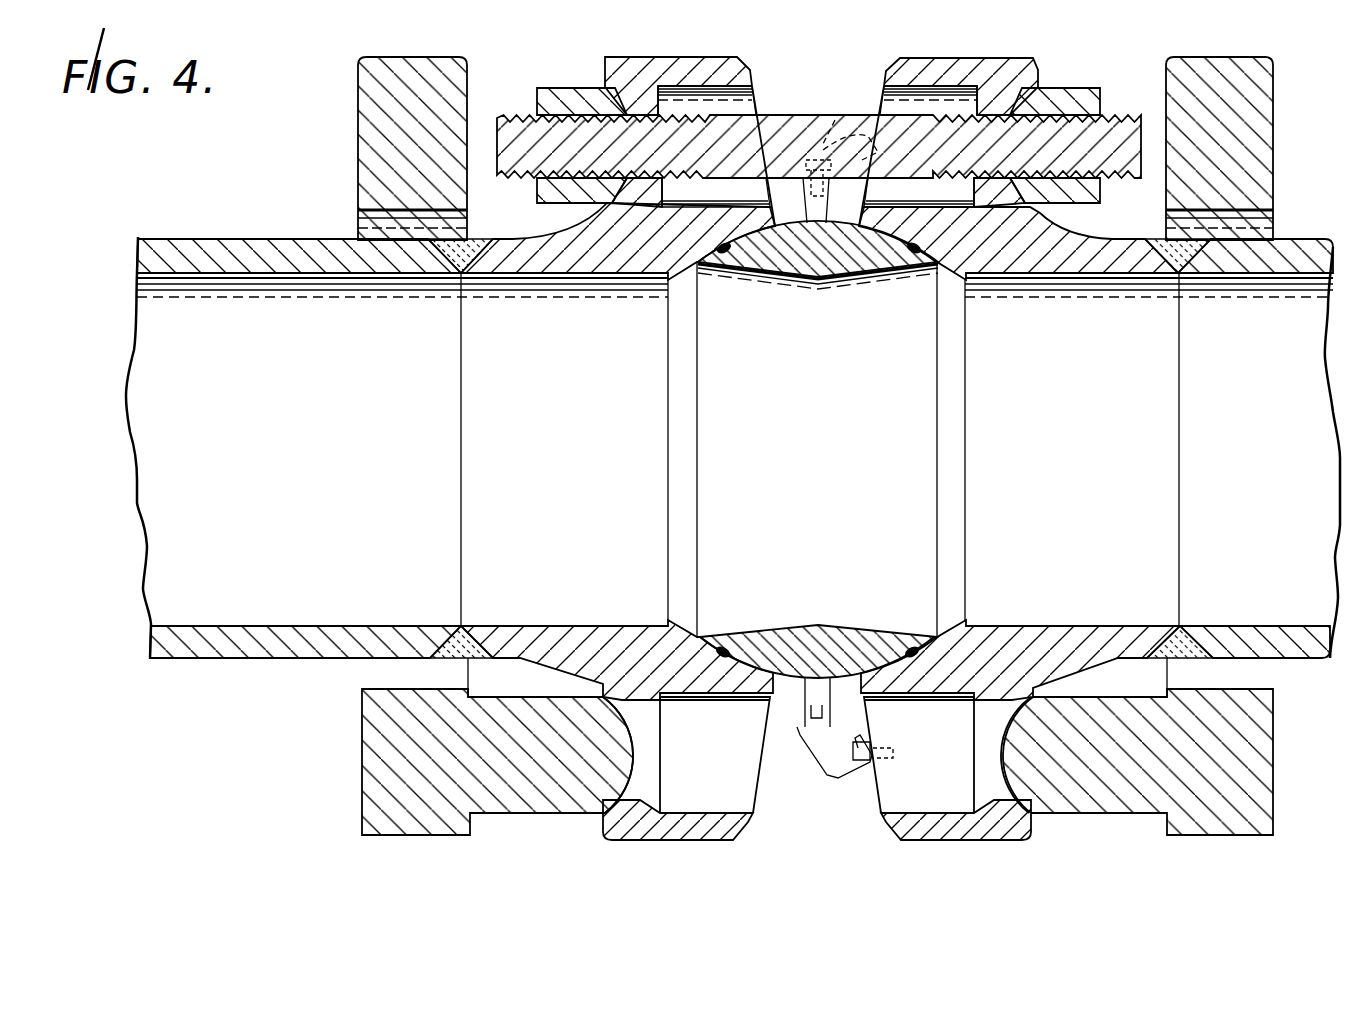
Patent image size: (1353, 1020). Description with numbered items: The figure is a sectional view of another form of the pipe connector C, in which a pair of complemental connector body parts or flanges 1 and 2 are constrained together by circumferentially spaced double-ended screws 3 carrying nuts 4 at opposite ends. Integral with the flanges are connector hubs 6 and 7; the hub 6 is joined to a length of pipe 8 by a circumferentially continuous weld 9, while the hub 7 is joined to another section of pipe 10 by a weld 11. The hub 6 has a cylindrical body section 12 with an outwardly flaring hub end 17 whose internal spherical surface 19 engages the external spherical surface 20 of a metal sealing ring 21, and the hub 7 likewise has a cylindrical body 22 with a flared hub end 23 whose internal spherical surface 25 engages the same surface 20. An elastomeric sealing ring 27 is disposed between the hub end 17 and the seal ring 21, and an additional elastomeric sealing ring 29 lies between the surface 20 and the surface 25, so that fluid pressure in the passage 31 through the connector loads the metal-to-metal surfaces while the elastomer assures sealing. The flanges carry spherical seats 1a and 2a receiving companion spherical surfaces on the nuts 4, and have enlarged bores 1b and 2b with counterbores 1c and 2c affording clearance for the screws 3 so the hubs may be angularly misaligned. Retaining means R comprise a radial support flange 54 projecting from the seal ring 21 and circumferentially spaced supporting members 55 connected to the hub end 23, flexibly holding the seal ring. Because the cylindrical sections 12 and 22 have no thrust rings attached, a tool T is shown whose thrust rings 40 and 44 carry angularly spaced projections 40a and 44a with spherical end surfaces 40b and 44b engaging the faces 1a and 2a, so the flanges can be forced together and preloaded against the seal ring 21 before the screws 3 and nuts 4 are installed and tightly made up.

The connector body part 1 is at (681, 442).
The spherical seat 1a is at (640, 732).
The enlarged bore 1b is at (640, 100).
The counterbore 1c is at (716, 810).
The connector body part 2 is at (978, 443).
The spherical seat 2a is at (1000, 740).
The enlarged bore 2b is at (1000, 96).
The counterbore 2c is at (905, 815).
The screw 3 is at (770, 114).
The nut 4 is at (548, 90).
The connector hub 6 is at (618, 451).
The connector hub 7 is at (1019, 453).
The pipe 8 is at (178, 656).
The weld 9 is at (442, 632).
The pipe 10 is at (1310, 650).
The weld 11 is at (1195, 640).
The cylindrical body section 12 is at (498, 630).
The hub end 17 is at (692, 676).
The internal spherical surface 19 is at (707, 682).
The external spherical surface 20 is at (762, 222).
The metal sealing ring 21 is at (833, 640).
The cylindrical body 22 is at (1120, 640).
The hub end 23 is at (933, 672).
The internal spherical surface 25 is at (902, 660).
The elastomeric sealing ring 27 is at (718, 247).
The elastomeric sealing ring 29 is at (918, 247).
The passage 31 is at (770, 450).
The tool thrust ring 40 is at (461, 476).
The projection 40a is at (536, 800).
The spherical end surface 40b is at (588, 820).
The tool thrust ring 44 is at (1140, 474).
The projection 44a is at (1100, 812).
The spherical end surface 44b is at (985, 812).
The radial support flange 54 is at (803, 197).
The supporting member 55 is at (830, 124).
The pipe connector C is at (1145, 62).
The tool T is at (332, 797).
The retaining means R is at (808, 772).